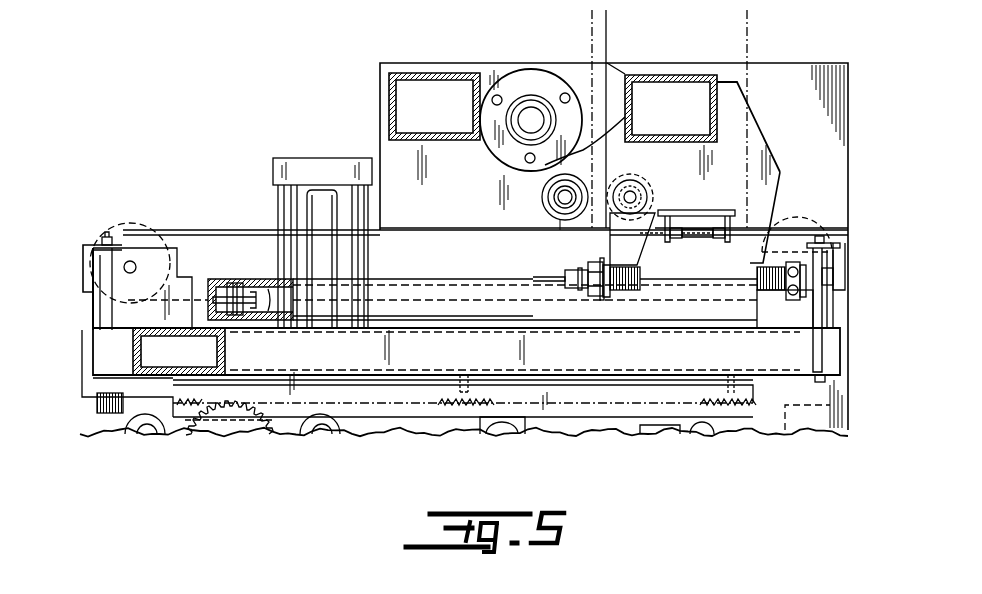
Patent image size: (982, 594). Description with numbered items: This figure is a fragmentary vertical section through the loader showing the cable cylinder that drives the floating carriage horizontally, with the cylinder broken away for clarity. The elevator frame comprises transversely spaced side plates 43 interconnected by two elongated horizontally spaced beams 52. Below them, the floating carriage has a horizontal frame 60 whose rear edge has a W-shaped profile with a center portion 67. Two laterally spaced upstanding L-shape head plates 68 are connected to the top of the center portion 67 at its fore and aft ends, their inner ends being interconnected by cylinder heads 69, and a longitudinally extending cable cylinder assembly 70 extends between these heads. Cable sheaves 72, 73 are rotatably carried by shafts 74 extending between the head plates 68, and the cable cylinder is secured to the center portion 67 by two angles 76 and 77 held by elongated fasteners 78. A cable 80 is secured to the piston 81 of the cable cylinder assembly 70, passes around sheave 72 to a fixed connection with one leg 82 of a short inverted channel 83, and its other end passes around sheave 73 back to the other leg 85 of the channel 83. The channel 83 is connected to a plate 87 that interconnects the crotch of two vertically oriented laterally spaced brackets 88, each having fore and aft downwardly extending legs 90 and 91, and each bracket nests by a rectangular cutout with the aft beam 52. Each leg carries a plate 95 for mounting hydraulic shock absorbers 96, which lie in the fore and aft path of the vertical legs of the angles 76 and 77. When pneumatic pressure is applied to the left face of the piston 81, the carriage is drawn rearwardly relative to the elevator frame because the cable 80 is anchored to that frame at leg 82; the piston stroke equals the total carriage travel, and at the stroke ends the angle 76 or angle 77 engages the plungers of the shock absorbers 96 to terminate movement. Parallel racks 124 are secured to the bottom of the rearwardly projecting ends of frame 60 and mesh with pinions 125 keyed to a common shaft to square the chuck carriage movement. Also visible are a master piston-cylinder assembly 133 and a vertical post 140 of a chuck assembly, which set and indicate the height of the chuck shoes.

The side plates 43 is at (395, 147).
The beams 52 is at (455, 73).
The horizontal frame 60 is at (92, 336).
The center portion 67 is at (680, 348).
The head plates 68 is at (97, 302).
The cylinder heads 69 is at (214, 279).
The cable cylinder assembly 70 is at (470, 276).
The cable sheave 72 is at (128, 237).
The cable sheave 73 is at (822, 243).
The shafts 74 is at (168, 262).
The angle 76 is at (83, 262).
The angle 77 is at (840, 252).
The elongated fasteners 78 is at (108, 318).
The cable 80 is at (240, 230).
The piston 81 is at (237, 283).
The leg 82 is at (670, 240).
The inverted channel 83 is at (697, 222).
The leg 85 is at (778, 218).
The plate 87 is at (697, 210).
The brackets 88 is at (740, 118).
The fore leg 90 is at (612, 242).
The aft leg 91 is at (790, 238).
The plate 95 is at (604, 300).
The hydraulic shock absorbers 96 is at (579, 292).
The racks 124 is at (718, 405).
The pinions 125 is at (248, 435).
The master piston-cylinder assembly 133 is at (278, 200).
The post 140 is at (340, 212).